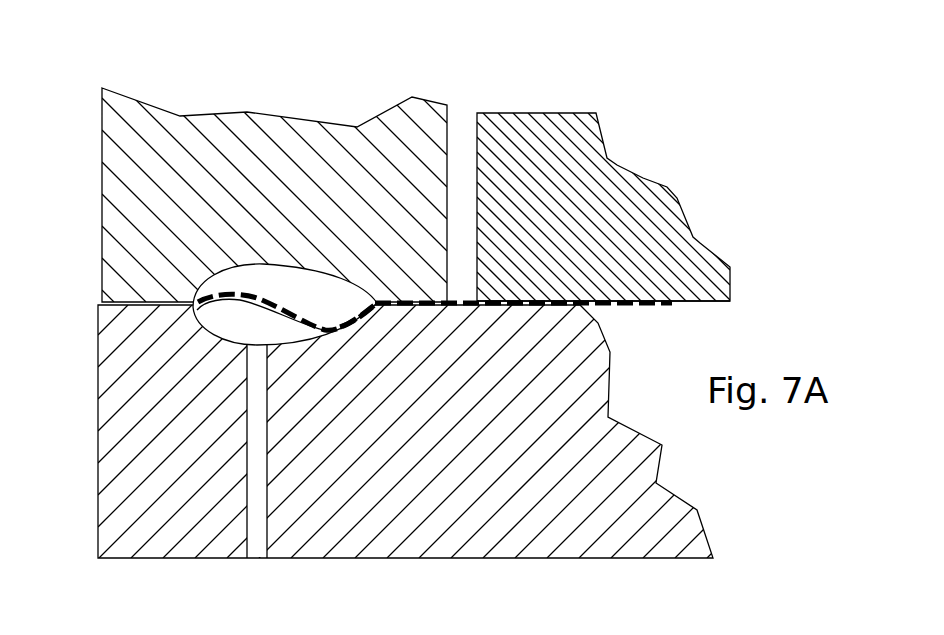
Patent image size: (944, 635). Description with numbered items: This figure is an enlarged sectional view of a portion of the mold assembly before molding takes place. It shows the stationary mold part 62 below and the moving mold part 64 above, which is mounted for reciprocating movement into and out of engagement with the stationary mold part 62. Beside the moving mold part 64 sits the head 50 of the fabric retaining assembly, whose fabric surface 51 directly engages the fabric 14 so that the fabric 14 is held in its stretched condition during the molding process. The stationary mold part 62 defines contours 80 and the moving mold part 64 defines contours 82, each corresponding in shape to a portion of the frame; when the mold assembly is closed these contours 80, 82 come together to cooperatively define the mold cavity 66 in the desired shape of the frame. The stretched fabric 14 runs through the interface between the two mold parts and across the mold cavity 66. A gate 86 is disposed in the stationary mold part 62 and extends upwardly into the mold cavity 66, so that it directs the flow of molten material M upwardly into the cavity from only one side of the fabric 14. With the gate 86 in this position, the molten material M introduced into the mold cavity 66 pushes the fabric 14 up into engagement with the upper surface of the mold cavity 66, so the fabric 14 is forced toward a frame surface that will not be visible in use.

The head 50 is at (559, 113).
The fabric surface 51 is at (703, 302).
The moving mold part 64 is at (100, 207).
The stationary mold part 62 is at (568, 559).
The gate 86 is at (250, 393).
The contours 82 is at (270, 268).
The contours 80 is at (327, 328).
The mold cavity 66 is at (352, 307).
The fabric 14 is at (633, 306).
The molten material M is at (243, 323).